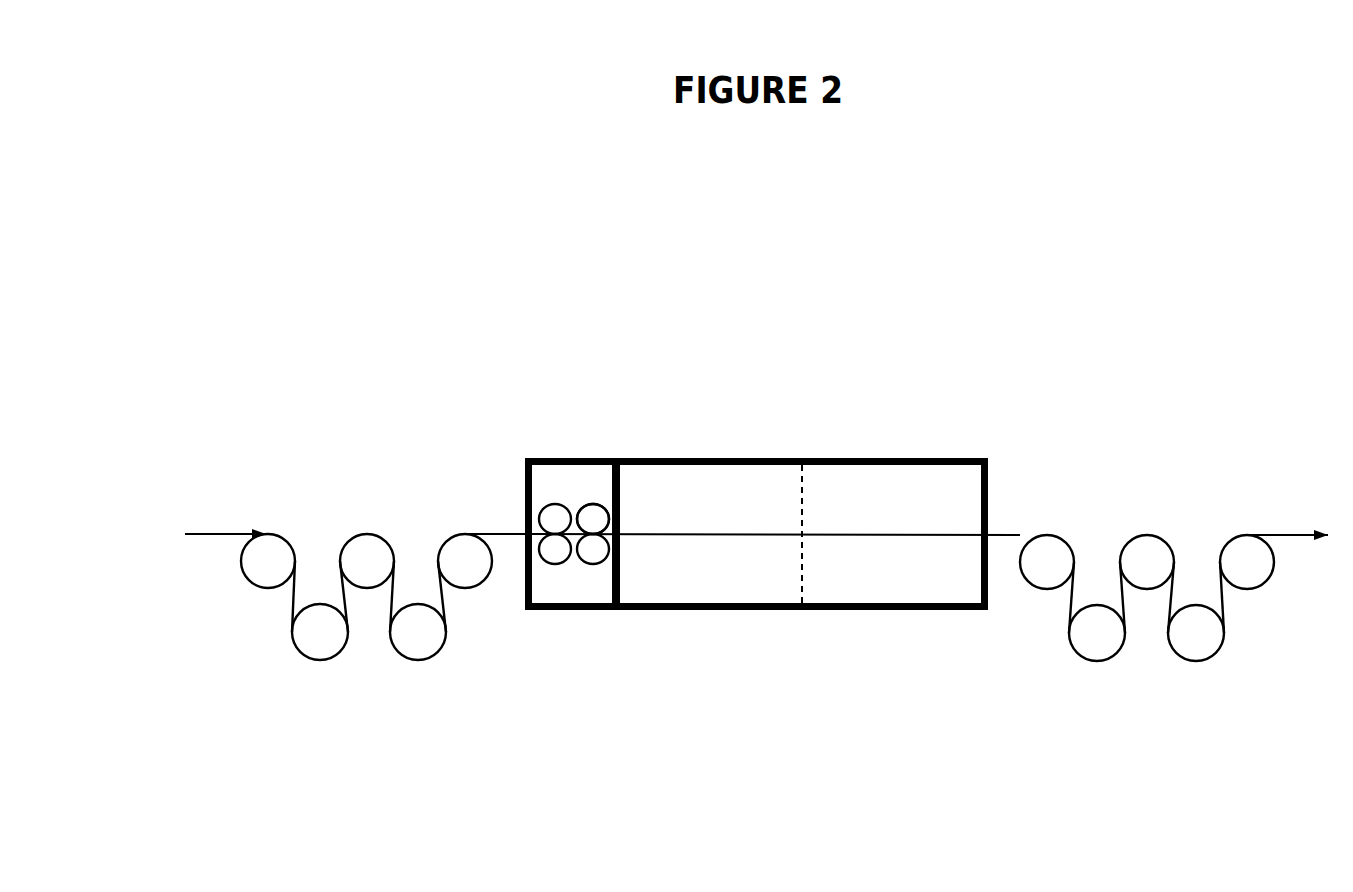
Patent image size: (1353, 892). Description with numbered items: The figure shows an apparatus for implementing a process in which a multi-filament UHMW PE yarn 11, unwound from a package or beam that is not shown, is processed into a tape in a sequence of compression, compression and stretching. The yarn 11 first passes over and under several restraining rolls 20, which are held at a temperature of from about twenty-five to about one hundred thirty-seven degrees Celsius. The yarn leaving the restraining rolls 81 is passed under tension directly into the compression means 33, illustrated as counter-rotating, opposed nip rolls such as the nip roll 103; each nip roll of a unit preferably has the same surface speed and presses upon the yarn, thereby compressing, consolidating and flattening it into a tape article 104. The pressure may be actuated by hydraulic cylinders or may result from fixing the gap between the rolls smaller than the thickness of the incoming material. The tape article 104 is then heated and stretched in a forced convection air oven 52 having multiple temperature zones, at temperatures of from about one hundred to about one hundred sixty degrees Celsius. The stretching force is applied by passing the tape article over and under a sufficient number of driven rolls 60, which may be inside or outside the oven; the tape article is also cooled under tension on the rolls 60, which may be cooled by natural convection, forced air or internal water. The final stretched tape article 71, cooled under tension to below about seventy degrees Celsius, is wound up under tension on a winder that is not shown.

The multi-filament UHMW PE yarn 11 is at (223, 533).
The restraining rolls 20 is at (278, 532).
The yarn leaving the restraining rolls 81 is at (502, 532).
The forced convection air oven 52 is at (745, 458).
The nip roll 103 is at (578, 505).
The compression means 33 is at (592, 562).
The tape article 104 is at (850, 532).
The driven rolls 60 is at (1065, 542).
The final stretched tape article 71 is at (1287, 502).